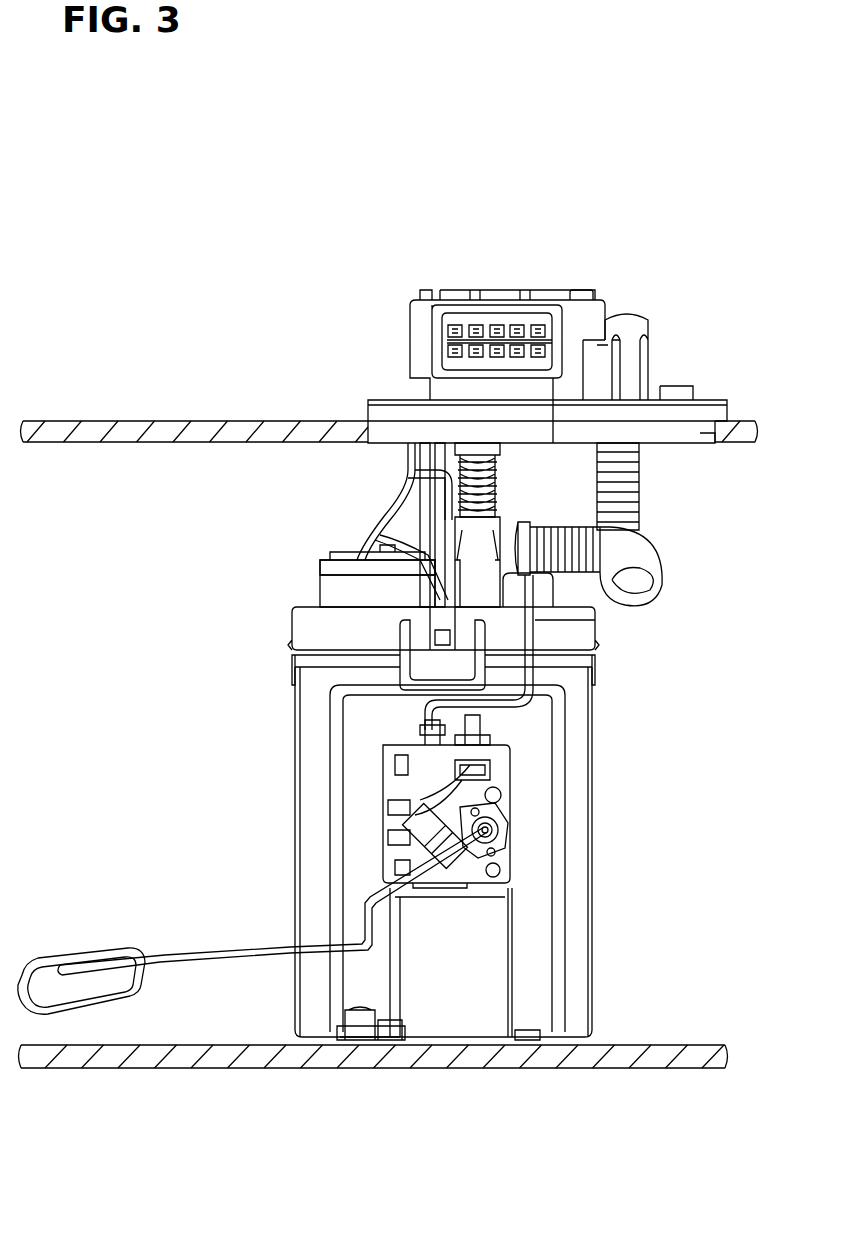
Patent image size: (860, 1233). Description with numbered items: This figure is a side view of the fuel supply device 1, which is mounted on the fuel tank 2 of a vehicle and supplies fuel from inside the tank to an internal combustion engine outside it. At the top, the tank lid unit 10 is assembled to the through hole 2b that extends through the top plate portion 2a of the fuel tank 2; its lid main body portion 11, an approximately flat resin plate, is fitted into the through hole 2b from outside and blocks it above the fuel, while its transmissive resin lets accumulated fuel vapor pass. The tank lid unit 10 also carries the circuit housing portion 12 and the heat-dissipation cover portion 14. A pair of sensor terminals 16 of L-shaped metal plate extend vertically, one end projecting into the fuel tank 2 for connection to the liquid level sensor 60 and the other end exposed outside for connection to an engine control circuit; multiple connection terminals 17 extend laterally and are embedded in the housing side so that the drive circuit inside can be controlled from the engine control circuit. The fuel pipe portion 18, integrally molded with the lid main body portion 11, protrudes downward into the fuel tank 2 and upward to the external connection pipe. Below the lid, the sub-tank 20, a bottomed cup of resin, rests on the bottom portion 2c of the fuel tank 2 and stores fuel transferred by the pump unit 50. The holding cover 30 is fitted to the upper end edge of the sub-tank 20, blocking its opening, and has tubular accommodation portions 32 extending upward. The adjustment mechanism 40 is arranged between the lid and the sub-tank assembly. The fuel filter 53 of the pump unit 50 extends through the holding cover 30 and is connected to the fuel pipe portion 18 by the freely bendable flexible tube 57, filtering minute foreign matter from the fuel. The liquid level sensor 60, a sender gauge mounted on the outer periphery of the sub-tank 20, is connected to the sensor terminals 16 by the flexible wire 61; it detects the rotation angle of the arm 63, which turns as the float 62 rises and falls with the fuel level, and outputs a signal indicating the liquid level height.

The fuel supply device 1 is at (701, 262).
The fuel tank 2 is at (58, 421).
The top plate portion 2a is at (740, 424).
The through hole 2b is at (700, 443).
The bottom portion 2c is at (690, 1045).
The tank lid unit 10 is at (726, 389).
The lid main body portion 11 is at (378, 402).
The circuit housing portion 12 is at (598, 318).
The heat-dissipation cover portion 14 is at (590, 292).
The sensor terminal 16 is at (450, 345).
The connection terminal 17 is at (538, 326).
The fuel pipe portion 18 is at (640, 328).
The sub-tank 20 is at (592, 702).
The holding cover 30 is at (595, 633).
The accommodation portion 32 is at (535, 622).
The adjustment mechanism 40 is at (616, 480).
The pump unit 50 is at (333, 545).
The fuel filter 53 is at (330, 592).
The flexible tube 57 is at (655, 572).
The liquid level sensor 60 is at (530, 830).
The flexible wire 61 is at (515, 708).
The float 62 is at (75, 960).
The arm 63 is at (232, 957).